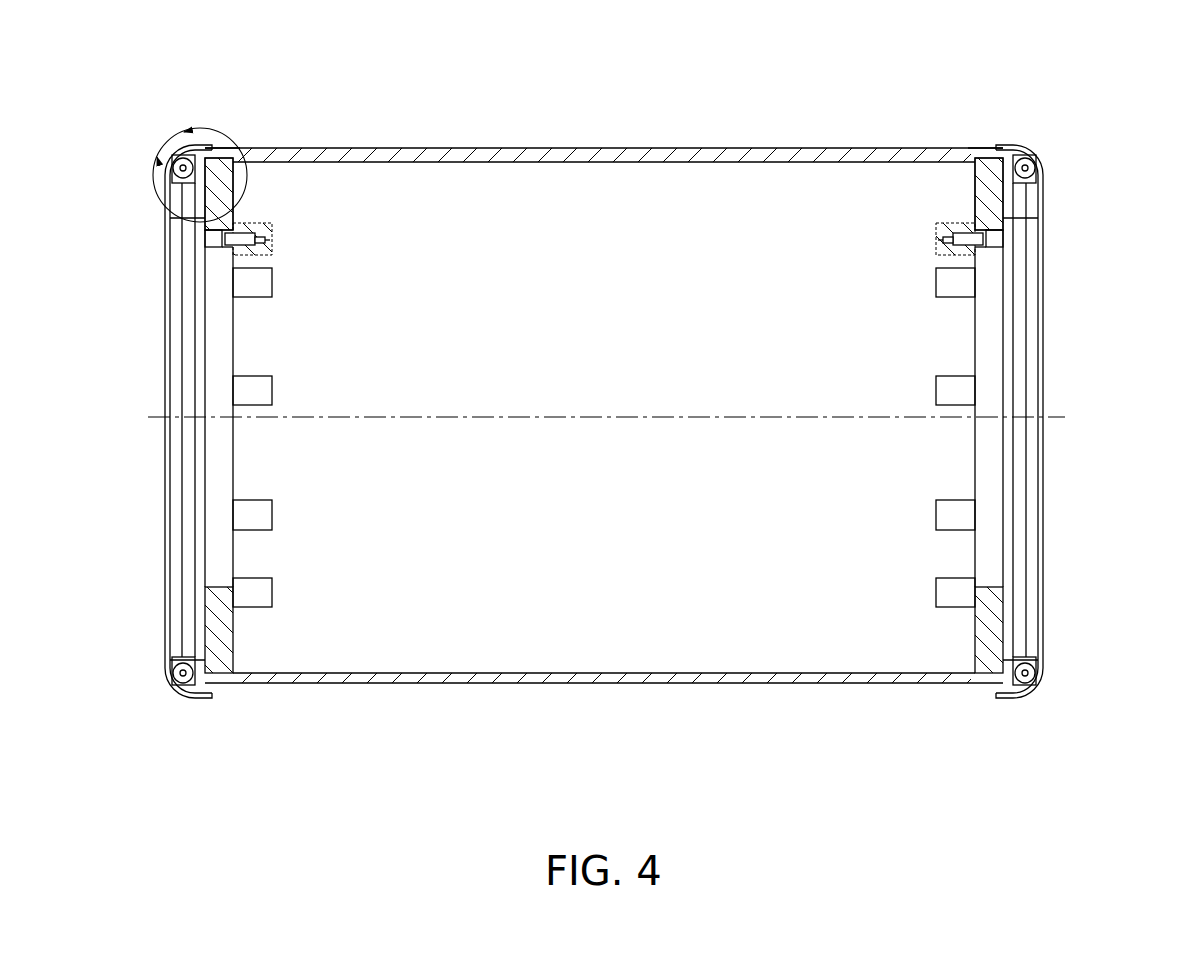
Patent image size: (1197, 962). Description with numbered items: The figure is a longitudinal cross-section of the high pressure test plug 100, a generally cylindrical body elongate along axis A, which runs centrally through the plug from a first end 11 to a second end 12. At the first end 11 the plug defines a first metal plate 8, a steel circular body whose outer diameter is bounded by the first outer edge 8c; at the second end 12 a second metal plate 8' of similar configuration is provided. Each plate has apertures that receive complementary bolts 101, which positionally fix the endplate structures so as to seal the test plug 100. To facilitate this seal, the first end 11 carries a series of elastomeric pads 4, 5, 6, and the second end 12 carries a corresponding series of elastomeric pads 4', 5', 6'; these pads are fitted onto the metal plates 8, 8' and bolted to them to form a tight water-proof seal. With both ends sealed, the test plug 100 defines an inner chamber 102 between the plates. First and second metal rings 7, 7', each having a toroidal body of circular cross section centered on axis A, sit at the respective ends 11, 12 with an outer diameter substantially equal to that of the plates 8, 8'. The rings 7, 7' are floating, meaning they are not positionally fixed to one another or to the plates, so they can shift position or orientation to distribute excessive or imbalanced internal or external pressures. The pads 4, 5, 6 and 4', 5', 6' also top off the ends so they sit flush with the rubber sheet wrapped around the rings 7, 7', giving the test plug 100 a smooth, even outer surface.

The test plug 100 is at (982, 84).
The inner chamber 102 is at (620, 316).
The bolts 101 is at (272, 240).
The first end 11 is at (228, 403).
The second end 12 is at (1053, 410).
The elastomeric pad 4 is at (248, 420).
The elastomeric pad 4' is at (1011, 420).
The elastomeric pad 5 is at (254, 420).
The elastomeric pad 5' is at (1060, 420).
The elastomeric pad 6 is at (164, 421).
The elastomeric pad 6' is at (1055, 421).
The first metal ring 7 is at (198, 403).
The second metal ring 7' is at (1064, 404).
The first metal plate 8 is at (604, 388).
The first outer edge 8c is at (230, 152).
The second metal plate 8' is at (955, 161).